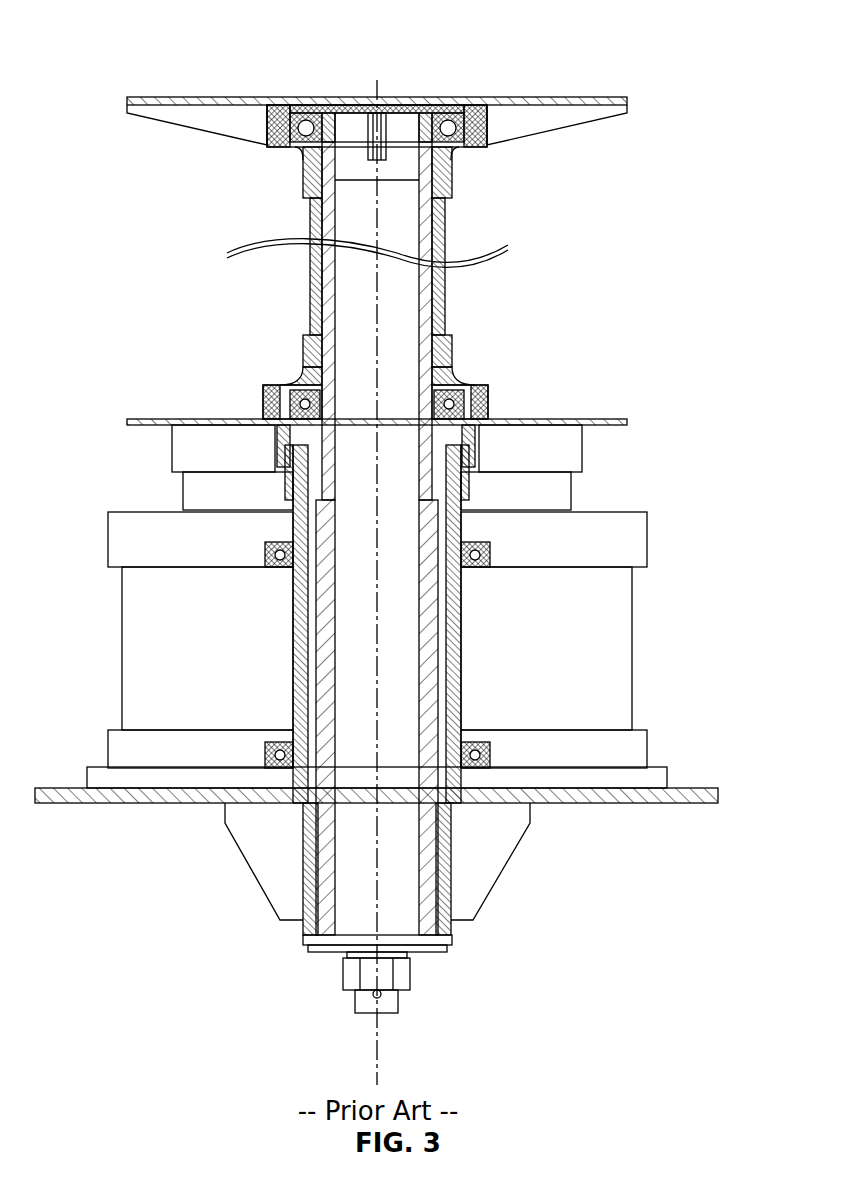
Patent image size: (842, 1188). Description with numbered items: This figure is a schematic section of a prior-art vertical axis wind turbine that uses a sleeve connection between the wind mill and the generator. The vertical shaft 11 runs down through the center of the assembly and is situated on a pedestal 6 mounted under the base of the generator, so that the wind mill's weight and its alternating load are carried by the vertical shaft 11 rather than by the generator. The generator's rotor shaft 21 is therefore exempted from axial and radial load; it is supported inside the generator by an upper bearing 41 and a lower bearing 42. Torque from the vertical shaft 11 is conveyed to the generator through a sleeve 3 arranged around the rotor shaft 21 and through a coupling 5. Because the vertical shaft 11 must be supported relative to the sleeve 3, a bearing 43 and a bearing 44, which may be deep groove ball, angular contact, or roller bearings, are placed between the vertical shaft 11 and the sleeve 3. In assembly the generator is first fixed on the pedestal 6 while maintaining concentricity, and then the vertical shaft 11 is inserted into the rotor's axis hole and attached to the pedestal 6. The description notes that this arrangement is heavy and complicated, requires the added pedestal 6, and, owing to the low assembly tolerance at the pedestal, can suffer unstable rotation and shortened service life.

The bearing 44 is at (490, 110).
The sleeve 3 is at (447, 323).
The vertical shaft 11 is at (447, 369).
The bearing 43 is at (488, 398).
The coupling 5 is at (497, 465).
The upper bearing 41 is at (500, 548).
The rotor shaft 21 is at (462, 660).
The lower bearing 42 is at (490, 747).
The pedestal 6 is at (497, 847).